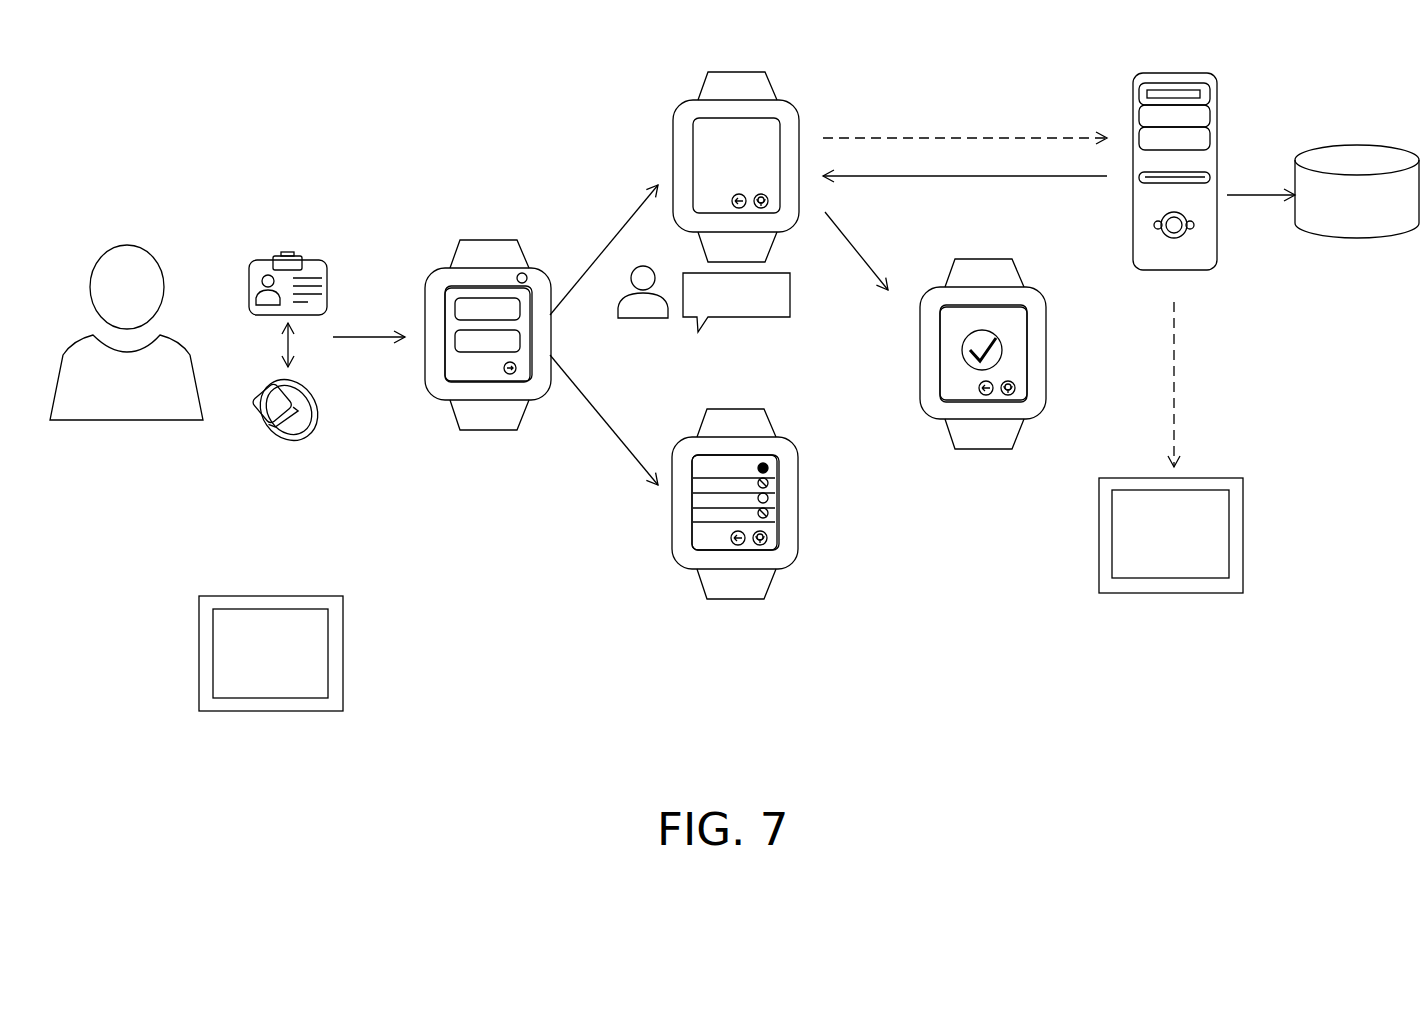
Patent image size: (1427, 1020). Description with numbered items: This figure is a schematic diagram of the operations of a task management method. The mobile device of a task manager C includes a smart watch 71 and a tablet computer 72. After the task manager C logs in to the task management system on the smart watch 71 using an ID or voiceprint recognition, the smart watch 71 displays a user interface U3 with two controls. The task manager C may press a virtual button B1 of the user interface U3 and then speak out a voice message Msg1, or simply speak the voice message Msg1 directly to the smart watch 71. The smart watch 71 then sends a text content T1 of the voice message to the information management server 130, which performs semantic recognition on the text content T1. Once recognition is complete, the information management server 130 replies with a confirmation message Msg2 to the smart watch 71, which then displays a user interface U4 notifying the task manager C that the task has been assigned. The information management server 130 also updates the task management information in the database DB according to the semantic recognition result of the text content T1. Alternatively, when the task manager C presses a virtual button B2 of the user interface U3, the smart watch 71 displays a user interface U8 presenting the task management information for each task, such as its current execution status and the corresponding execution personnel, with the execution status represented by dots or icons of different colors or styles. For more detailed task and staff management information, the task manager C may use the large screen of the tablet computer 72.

The smart watch 71 is at (303, 443).
The tablet computer 72 is at (268, 711).
The information management server 130 is at (1172, 73).
The task manager C is at (112, 420).
The user interface U3 is at (442, 308).
The virtual button B1 is at (503, 300).
The virtual button B2 is at (522, 340).
The user interface U4 is at (1027, 328).
The user interface U8 is at (777, 480).
The voice message Msg1 is at (760, 317).
The confirmation message Msg2 is at (965, 197).
The text content T1 is at (965, 118).
The database DB is at (1357, 238).